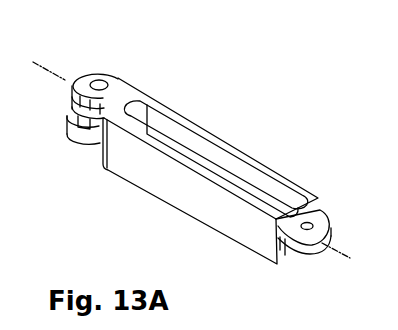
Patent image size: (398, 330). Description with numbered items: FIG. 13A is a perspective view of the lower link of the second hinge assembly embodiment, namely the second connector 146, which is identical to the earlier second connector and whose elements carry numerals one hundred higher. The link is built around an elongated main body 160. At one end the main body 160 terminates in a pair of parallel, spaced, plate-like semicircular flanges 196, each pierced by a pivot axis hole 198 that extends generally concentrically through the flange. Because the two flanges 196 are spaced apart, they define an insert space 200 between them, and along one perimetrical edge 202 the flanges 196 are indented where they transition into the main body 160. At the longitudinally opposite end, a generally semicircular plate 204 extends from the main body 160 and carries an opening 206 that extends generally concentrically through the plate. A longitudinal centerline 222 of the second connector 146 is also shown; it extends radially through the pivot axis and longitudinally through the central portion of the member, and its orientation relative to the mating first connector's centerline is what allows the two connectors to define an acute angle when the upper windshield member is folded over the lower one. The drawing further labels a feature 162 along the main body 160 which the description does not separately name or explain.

The second connector 146 is at (219, 113).
The main body 160 is at (212, 208).
The slot 162 is at (263, 184).
The semicircular flanges 196 is at (87, 79).
The pivot axis hole 198 is at (101, 80).
The insert space 200 is at (83, 125).
The perimetrical edge 202 is at (105, 107).
The semicircular plate 204 is at (323, 208).
The opening 206 is at (307, 230).
The second connector centerline 222 is at (340, 262).